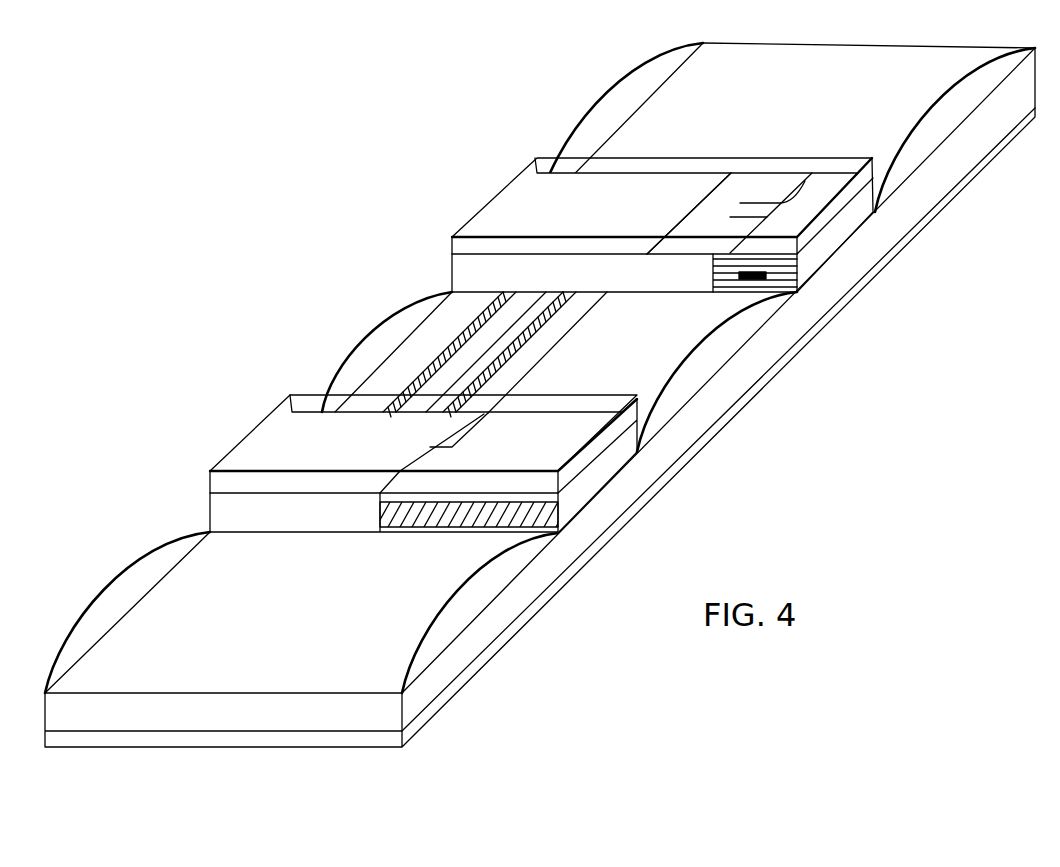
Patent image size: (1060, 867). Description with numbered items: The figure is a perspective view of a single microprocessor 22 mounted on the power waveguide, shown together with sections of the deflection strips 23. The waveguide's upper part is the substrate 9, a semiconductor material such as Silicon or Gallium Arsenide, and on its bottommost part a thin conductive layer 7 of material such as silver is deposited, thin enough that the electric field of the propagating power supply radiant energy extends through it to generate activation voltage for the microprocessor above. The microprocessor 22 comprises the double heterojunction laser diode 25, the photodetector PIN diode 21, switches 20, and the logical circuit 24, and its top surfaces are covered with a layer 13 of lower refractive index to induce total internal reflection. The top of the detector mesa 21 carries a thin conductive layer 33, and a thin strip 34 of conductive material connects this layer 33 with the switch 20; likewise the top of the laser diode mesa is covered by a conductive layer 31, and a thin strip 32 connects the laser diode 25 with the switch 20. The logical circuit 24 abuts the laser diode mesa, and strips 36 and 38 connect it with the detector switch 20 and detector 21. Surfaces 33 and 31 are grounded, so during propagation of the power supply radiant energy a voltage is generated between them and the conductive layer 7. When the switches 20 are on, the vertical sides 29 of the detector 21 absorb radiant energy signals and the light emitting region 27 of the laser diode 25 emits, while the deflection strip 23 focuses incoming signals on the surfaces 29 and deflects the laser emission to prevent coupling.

The conductive layer 7 is at (453, 688).
The substrate 9 is at (713, 405).
The layer of material 13 is at (500, 203).
The switch 20 is at (545, 333).
The photodetector PIN diode 21 is at (618, 458).
The microprocessor 22 is at (415, 746).
The deflection strip 23 is at (737, 340).
The logical circuit 24 is at (655, 213).
The double heterojunction laser diode 25 is at (845, 227).
The light emitting region 27 is at (760, 280).
The vertical sides 29 is at (537, 517).
The conductive layer 31 is at (823, 195).
The strip of conductive material 32 is at (762, 217).
The conductive layer 33 is at (567, 448).
The strip of conductive material 34 is at (427, 452).
The strip of conductive material 36 is at (517, 296).
The strip of conductive material 38 is at (518, 350).